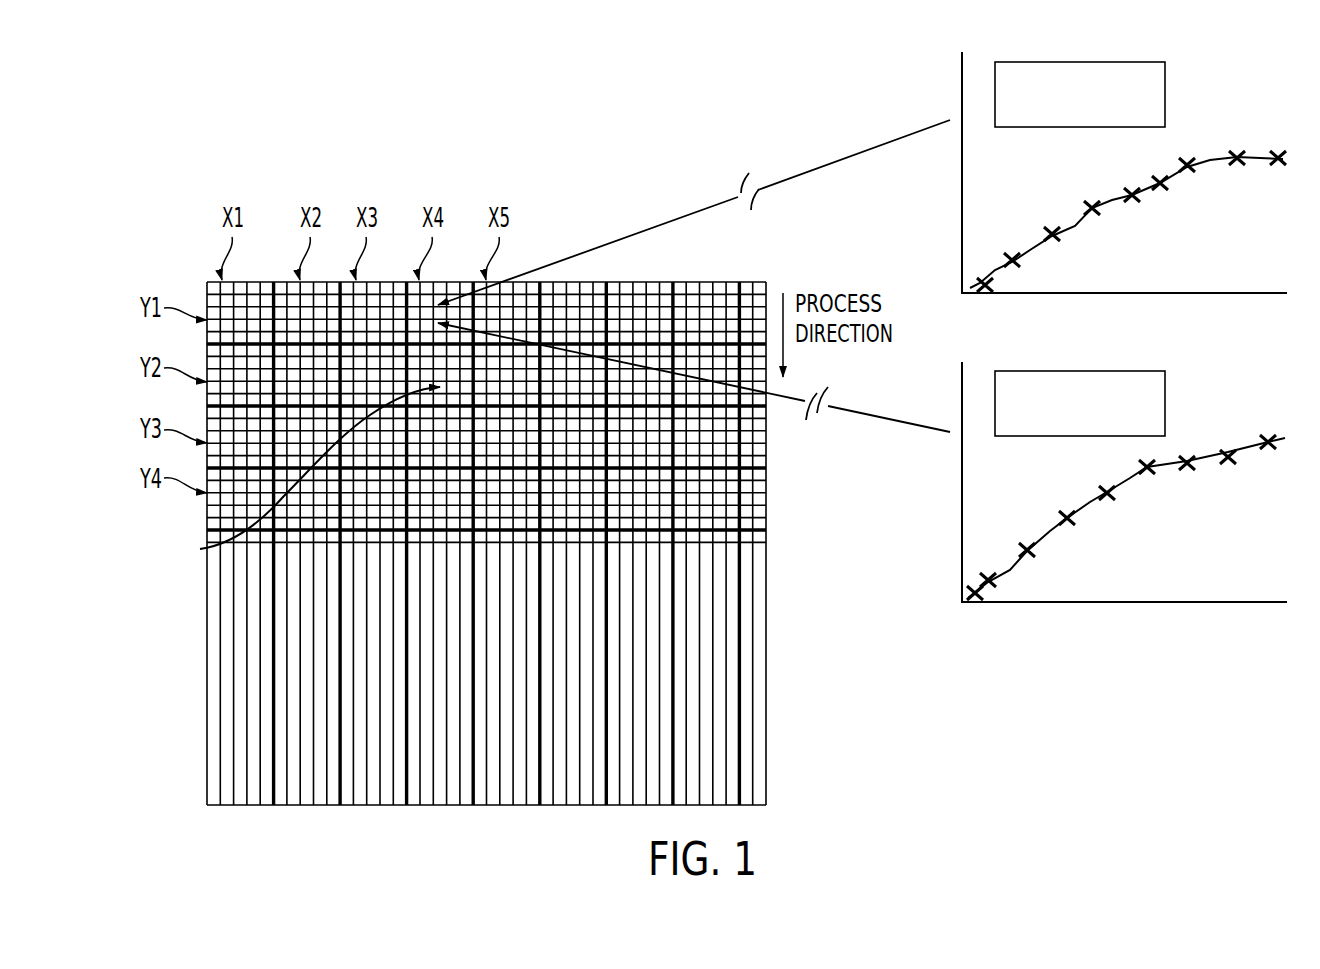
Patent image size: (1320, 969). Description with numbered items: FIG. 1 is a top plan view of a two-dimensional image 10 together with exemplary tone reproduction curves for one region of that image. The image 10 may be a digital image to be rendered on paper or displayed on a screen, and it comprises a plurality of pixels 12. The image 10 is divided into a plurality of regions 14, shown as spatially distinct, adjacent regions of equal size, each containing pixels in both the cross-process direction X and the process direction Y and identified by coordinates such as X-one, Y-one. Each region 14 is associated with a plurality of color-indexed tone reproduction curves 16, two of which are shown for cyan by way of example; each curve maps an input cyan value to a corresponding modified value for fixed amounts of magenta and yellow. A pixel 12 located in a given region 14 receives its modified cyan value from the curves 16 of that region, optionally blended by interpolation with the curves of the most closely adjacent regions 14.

The image 10 is at (217, 609).
The pixels 12 is at (200, 549).
The regions 14 is at (707, 448).
The color-indexed tone reproduction curves (CITRCs) 16 is at (913, 225).